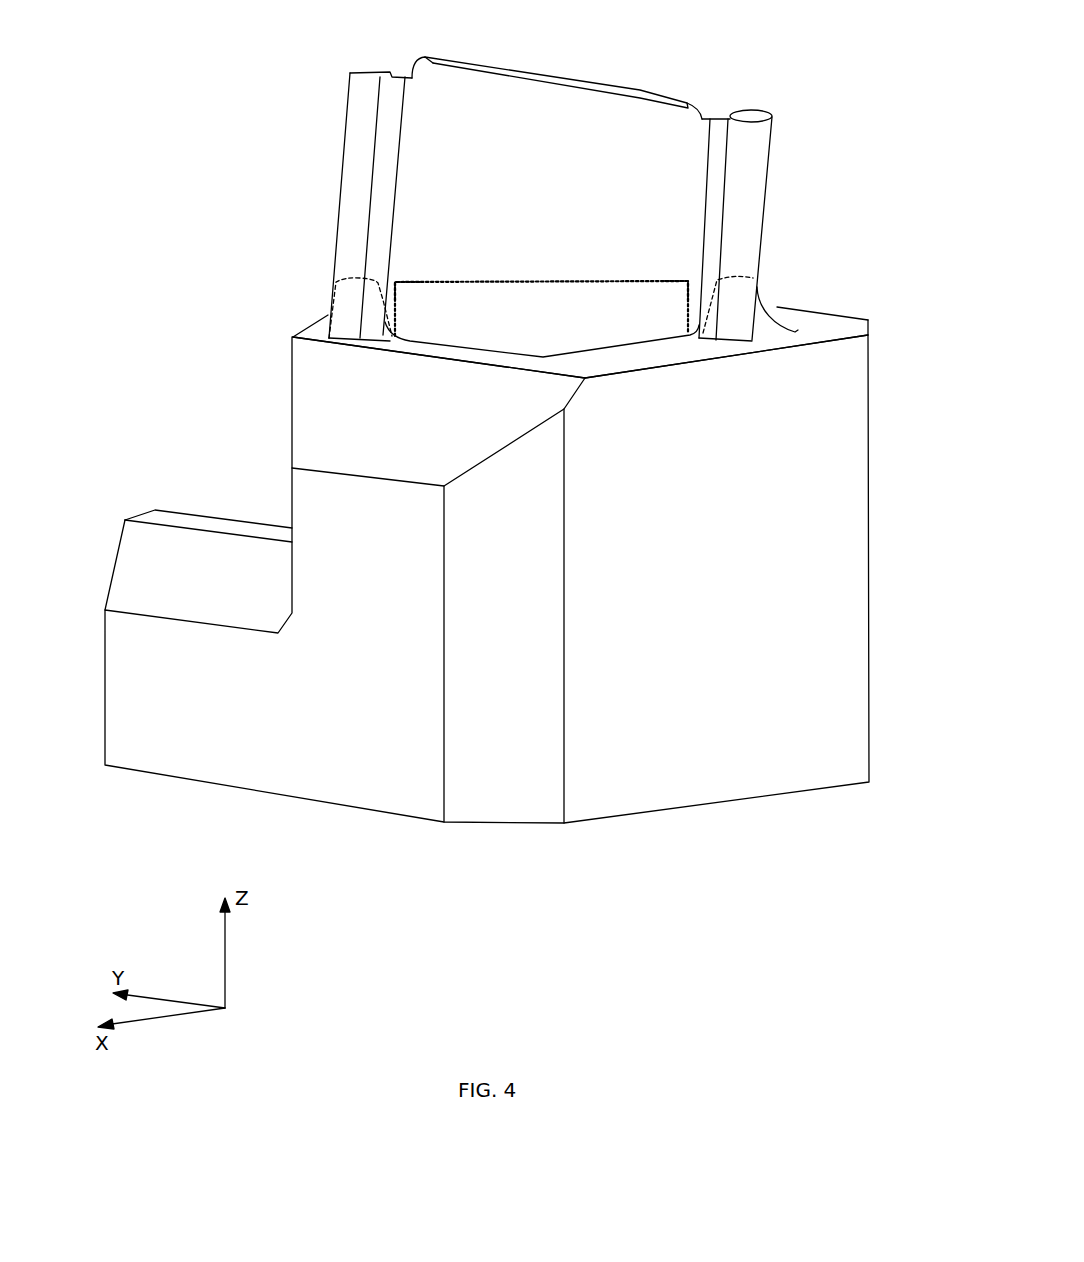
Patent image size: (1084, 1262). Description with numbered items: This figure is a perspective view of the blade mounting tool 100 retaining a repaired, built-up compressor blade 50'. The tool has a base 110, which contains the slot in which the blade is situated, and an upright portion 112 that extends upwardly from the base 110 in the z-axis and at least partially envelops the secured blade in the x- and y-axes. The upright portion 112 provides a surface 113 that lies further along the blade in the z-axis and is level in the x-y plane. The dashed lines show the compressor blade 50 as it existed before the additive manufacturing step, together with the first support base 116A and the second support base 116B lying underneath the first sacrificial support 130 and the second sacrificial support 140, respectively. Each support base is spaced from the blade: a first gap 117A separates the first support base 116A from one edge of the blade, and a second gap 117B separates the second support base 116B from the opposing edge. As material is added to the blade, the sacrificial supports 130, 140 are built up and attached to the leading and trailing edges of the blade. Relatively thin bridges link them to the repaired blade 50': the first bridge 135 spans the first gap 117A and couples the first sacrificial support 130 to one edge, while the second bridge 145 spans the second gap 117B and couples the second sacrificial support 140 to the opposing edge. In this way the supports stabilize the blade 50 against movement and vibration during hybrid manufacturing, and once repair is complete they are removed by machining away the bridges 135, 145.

The blade mounting tool 100 is at (218, 108).
The base 110 is at (165, 520).
The upright portion 112 is at (872, 409).
The surface 113 is at (847, 325).
The first support base 116A is at (345, 310).
The second support base 116B is at (743, 296).
The first gap 117A is at (398, 272).
The second gap 117B is at (692, 268).
The first sacrificial support 130 is at (332, 193).
The first bridge 135 is at (398, 76).
The second sacrificial support 140 is at (776, 215).
The second bridge 145 is at (722, 113).
The compressor blade 50 is at (541, 287).
The built-up compressor blade 50' is at (557, 69).